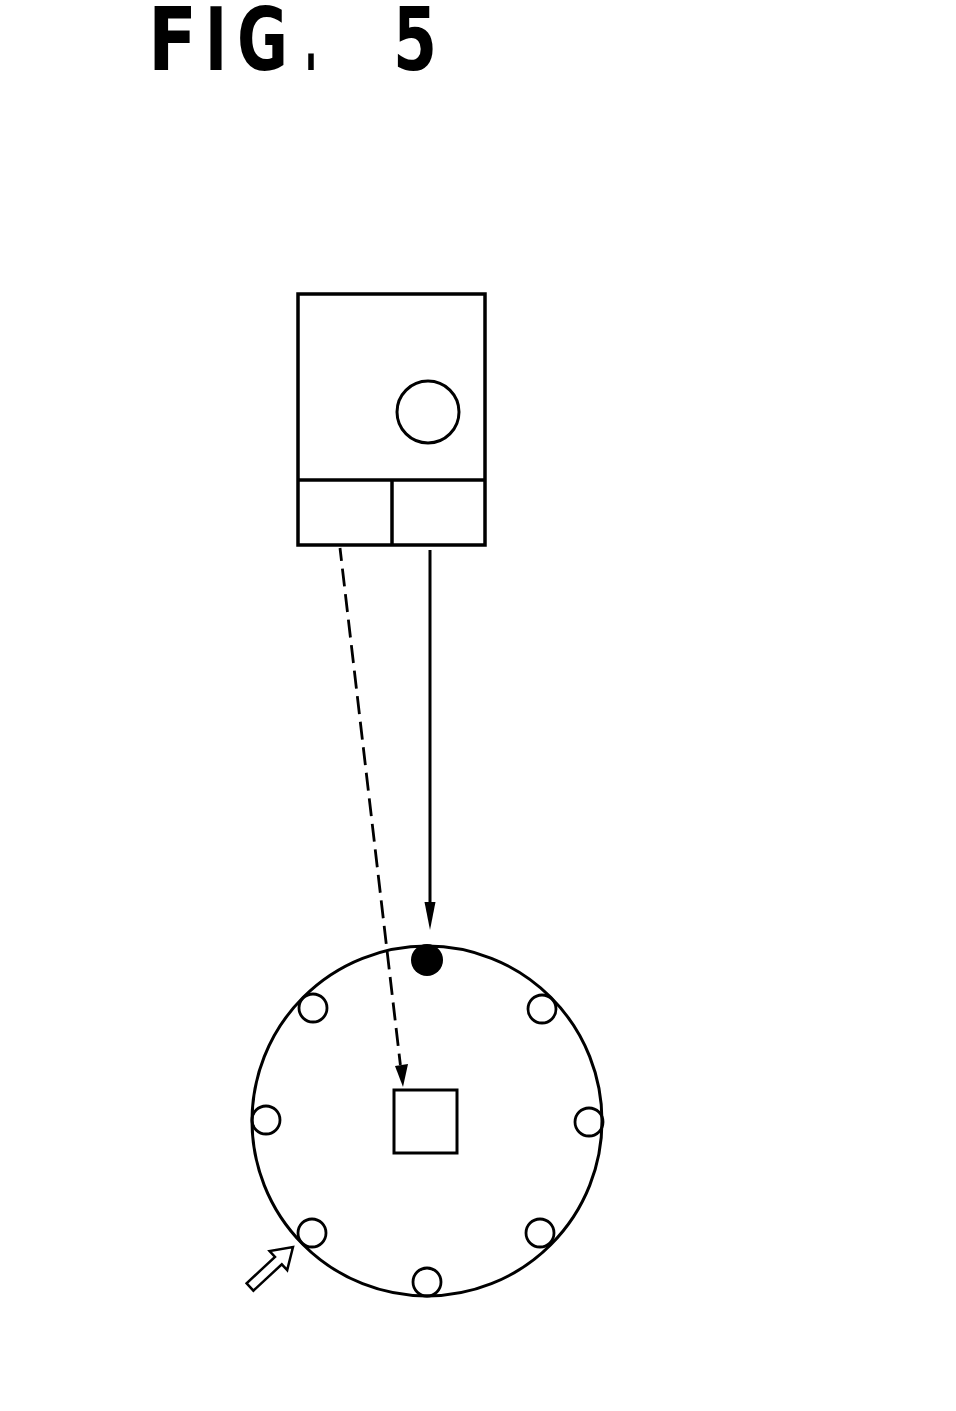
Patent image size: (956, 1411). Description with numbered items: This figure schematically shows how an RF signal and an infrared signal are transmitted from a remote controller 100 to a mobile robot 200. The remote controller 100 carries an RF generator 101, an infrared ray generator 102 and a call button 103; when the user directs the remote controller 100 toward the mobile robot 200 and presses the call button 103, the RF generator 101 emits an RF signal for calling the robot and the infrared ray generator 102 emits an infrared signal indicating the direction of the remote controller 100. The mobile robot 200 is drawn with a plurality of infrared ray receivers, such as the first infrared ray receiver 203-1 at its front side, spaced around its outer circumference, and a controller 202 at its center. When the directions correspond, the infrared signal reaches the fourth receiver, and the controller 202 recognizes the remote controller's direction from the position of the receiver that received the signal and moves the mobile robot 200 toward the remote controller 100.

The remote controller 100 is at (250, 310).
The RF generator 101 is at (313, 505).
The infrared ray generator 102 is at (462, 505).
The call button 103 is at (443, 409).
The mobile robot 200 is at (235, 998).
The controller 202 is at (437, 1125).
The infrared ray receiver 203-1 is at (310, 1232).